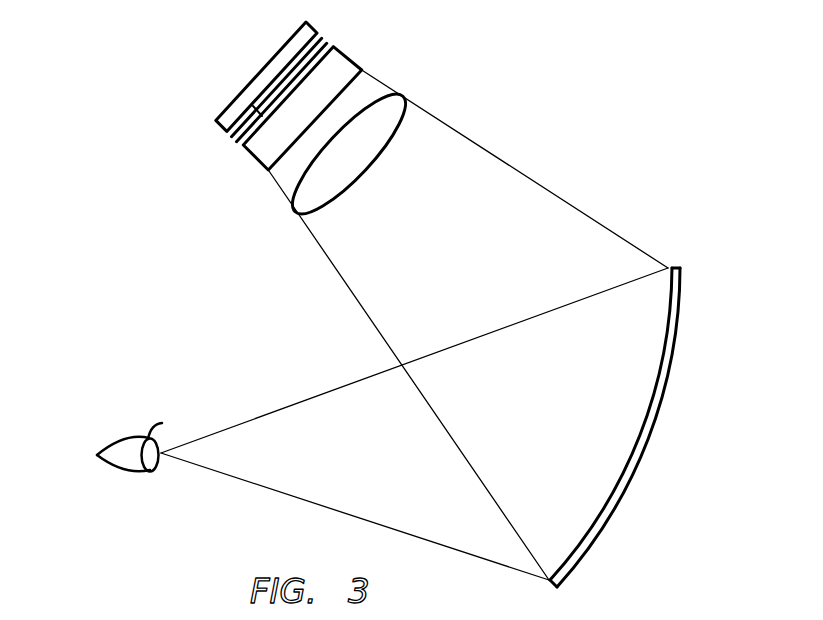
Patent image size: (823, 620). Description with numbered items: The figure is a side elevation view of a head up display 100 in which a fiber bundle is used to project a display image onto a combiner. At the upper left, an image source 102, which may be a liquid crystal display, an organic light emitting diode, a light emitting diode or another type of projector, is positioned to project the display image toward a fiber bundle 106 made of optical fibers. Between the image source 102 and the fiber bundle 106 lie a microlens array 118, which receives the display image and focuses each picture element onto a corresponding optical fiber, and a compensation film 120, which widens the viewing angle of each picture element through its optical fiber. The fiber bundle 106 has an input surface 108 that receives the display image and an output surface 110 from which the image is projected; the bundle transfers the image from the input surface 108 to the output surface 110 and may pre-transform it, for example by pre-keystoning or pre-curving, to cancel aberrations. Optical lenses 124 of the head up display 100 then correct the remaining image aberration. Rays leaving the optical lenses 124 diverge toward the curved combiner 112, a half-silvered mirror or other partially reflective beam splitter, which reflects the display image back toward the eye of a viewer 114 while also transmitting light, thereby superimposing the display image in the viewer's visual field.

The head up display 100 is at (567, 176).
The image source 102 is at (314, 27).
The fiber bundle 106 is at (353, 53).
The input surface 108 is at (256, 113).
The output surface 110 is at (325, 110).
The combiner 112 is at (645, 460).
The viewer 114 is at (137, 487).
The microlens array 118 is at (233, 138).
The compensation film 120 is at (237, 143).
The optical lenses 124 is at (322, 207).